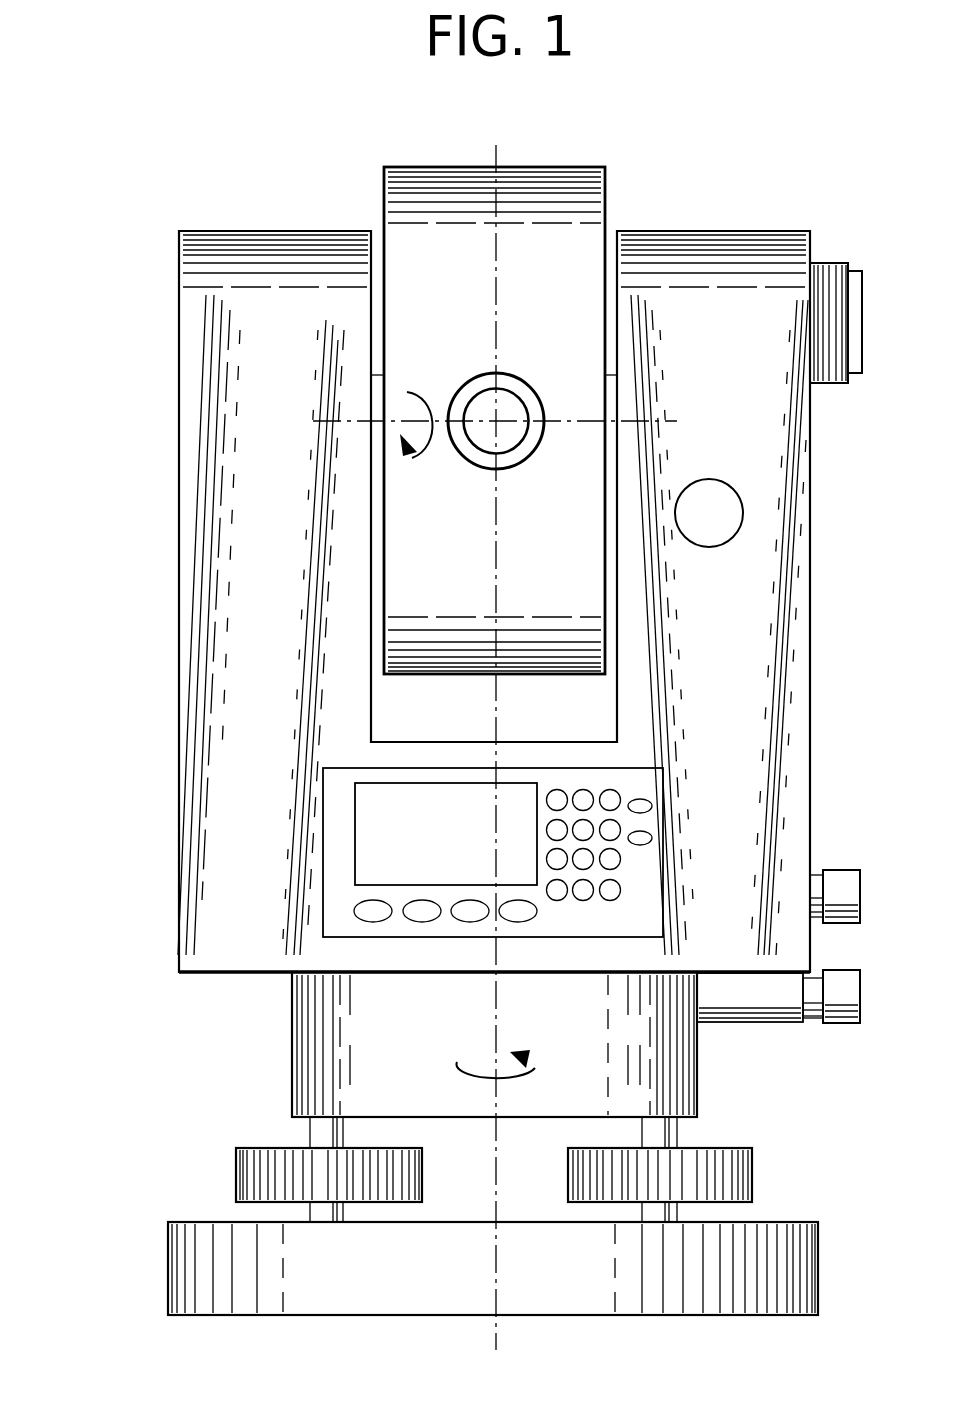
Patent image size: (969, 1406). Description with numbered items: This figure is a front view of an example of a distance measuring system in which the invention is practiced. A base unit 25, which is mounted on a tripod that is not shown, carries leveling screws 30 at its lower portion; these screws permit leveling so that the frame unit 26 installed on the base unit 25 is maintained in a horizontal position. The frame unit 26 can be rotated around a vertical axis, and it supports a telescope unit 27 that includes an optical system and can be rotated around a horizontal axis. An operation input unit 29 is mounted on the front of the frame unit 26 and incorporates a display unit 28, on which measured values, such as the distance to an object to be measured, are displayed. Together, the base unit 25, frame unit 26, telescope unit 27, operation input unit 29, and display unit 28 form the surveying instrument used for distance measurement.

The base unit 25 is at (185, 1177).
The frame unit 26 is at (180, 540).
The telescope unit 27 is at (384, 191).
The display unit 28 is at (368, 816).
The operation input unit 29 is at (663, 768).
The leveling screws 30 is at (752, 1170).